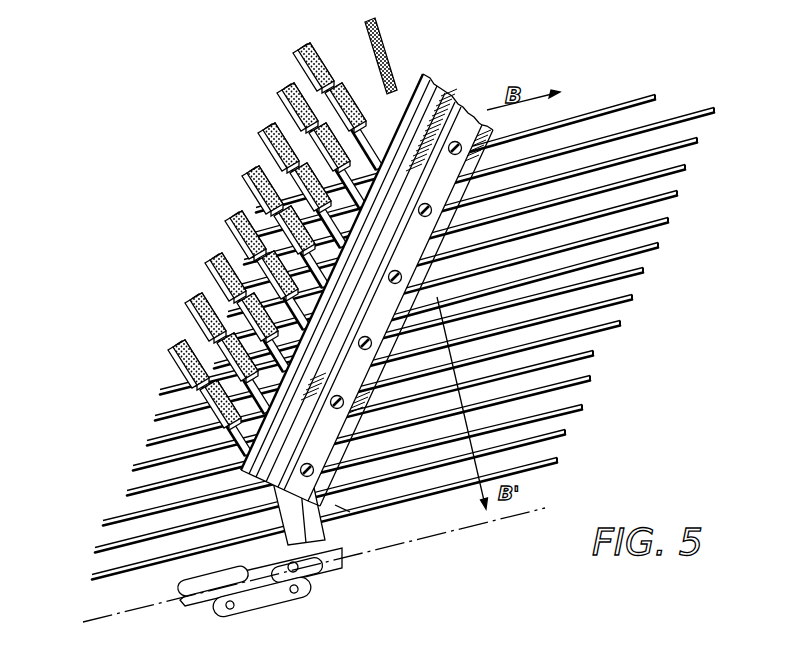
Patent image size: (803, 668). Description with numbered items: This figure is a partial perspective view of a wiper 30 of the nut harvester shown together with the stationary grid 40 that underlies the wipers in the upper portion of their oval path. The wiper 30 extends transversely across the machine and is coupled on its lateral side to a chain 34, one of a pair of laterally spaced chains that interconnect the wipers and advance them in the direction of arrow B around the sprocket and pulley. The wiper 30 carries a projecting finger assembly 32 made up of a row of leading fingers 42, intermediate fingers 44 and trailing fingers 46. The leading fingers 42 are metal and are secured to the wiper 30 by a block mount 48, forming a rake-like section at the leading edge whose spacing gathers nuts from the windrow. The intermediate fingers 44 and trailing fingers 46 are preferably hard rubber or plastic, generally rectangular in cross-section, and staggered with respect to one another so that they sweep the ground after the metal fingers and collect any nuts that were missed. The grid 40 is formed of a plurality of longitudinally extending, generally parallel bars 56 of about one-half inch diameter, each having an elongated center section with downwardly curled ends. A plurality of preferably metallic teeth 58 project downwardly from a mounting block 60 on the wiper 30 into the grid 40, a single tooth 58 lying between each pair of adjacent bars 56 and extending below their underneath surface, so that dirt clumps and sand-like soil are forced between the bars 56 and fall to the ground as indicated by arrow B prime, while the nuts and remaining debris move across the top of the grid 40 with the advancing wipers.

The wiper 30 is at (296, 281).
The finger assembly 32 is at (228, 228).
The chain 34 is at (345, 563).
The stationary grid 40 is at (409, 337).
The leading fingers 42 is at (386, 48).
The intermediate fingers 44 is at (235, 300).
The trailing fingers 46 is at (262, 137).
The block mount 48 is at (440, 84).
The bars 56 is at (645, 268).
The teeth 58 is at (341, 512).
The mounting block 60 is at (277, 498).